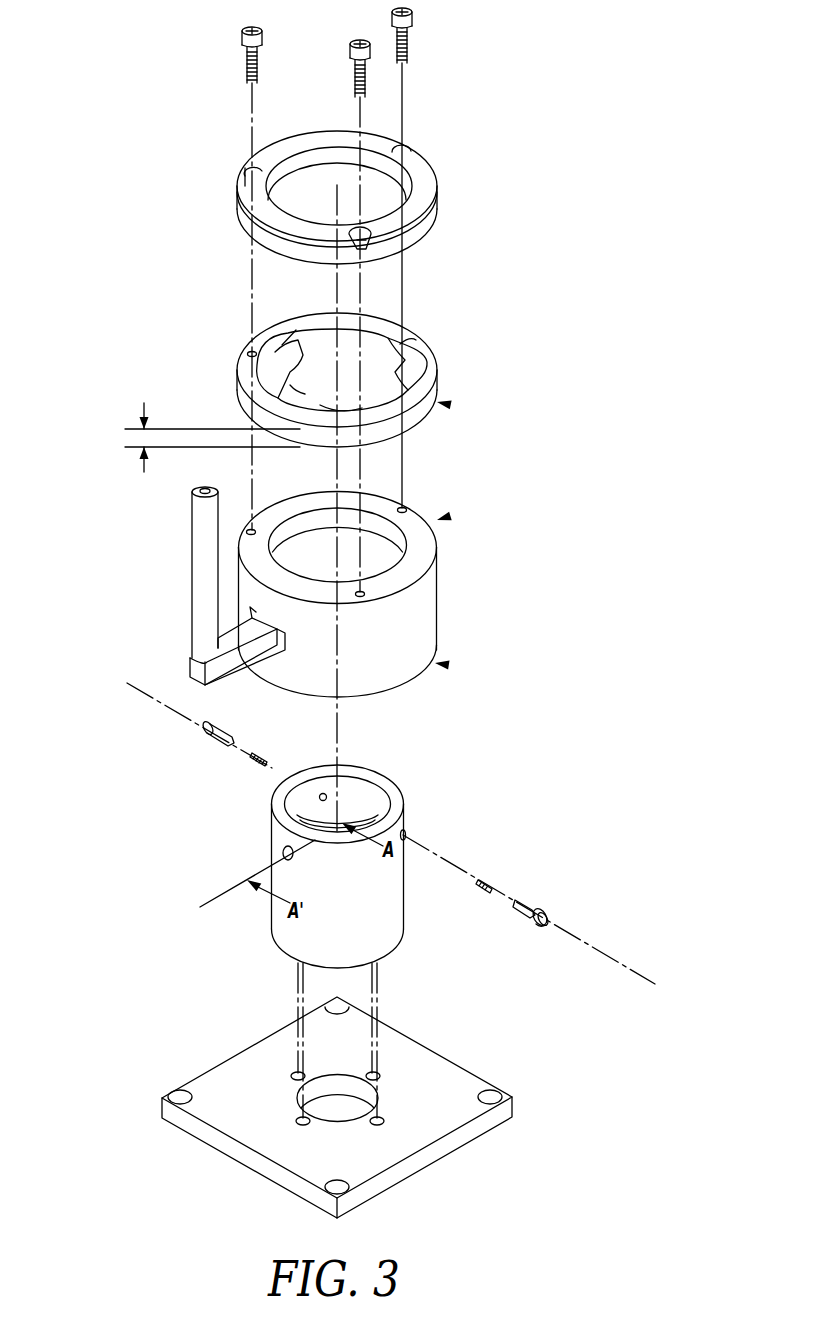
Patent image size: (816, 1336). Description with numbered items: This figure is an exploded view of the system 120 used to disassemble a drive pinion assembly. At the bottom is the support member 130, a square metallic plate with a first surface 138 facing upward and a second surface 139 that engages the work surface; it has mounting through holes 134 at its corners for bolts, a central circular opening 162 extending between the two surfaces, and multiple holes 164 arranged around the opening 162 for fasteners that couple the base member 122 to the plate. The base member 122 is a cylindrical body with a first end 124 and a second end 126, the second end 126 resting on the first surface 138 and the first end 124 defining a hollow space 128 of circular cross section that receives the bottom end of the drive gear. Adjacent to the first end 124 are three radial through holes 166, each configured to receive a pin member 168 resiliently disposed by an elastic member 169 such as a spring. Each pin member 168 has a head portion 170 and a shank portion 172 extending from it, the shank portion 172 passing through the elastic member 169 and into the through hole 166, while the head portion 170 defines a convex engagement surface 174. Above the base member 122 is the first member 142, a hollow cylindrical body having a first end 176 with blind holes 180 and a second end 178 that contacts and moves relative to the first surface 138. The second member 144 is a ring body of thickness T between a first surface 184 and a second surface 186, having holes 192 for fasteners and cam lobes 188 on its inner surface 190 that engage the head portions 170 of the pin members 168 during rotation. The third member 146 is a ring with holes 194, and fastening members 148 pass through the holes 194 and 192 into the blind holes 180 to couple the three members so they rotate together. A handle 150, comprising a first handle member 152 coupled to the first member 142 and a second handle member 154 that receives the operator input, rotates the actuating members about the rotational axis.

The system 120 is at (91, 178).
The fastening members 148 is at (414, 15).
The third member 146 is at (437, 207).
The holes 194 is at (372, 232).
The second member 144 is at (437, 380).
The first surface 184 is at (418, 346).
The second surface 186 is at (448, 405).
The cam lobes 188 is at (300, 394).
The inner surface 190 is at (256, 360).
The holes 192 is at (250, 350).
The thickness T is at (143, 408).
The first member 142 is at (437, 595).
The blind holes 180 is at (404, 508).
The first end 176 is at (449, 516).
The second end 178 is at (448, 666).
The handle 150 is at (190, 607).
The second handle member 154 is at (192, 575).
The first handle member 152 is at (232, 668).
The base member 122 is at (379, 837).
The first end 124 is at (379, 837).
The second end 126 is at (405, 940).
The hollow space 128 is at (353, 793).
The through holes 166 is at (323, 793).
The pin member 168 is at (200, 740).
The elastic member 169 is at (262, 752).
The head portion 170 is at (548, 913).
The shank portion 172 is at (527, 903).
The engagement surface 174 is at (540, 925).
The support member 130 is at (338, 1107).
The mounting through holes 134 is at (496, 1094).
The first surface 138 is at (447, 1072).
The second surface 139 is at (410, 1180).
The opening 162 is at (318, 1080).
The holes 164 is at (383, 1107).